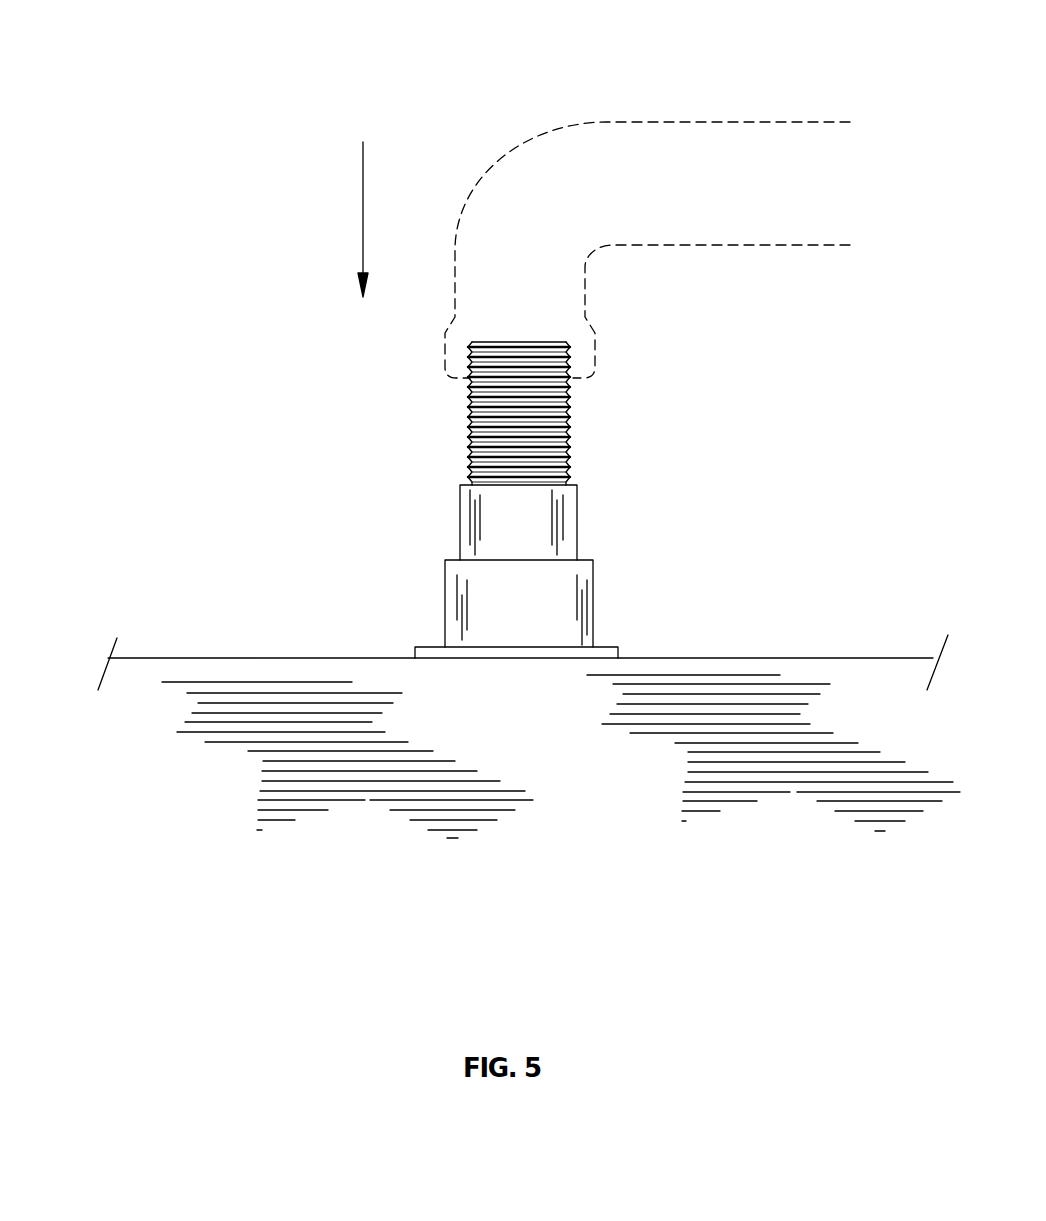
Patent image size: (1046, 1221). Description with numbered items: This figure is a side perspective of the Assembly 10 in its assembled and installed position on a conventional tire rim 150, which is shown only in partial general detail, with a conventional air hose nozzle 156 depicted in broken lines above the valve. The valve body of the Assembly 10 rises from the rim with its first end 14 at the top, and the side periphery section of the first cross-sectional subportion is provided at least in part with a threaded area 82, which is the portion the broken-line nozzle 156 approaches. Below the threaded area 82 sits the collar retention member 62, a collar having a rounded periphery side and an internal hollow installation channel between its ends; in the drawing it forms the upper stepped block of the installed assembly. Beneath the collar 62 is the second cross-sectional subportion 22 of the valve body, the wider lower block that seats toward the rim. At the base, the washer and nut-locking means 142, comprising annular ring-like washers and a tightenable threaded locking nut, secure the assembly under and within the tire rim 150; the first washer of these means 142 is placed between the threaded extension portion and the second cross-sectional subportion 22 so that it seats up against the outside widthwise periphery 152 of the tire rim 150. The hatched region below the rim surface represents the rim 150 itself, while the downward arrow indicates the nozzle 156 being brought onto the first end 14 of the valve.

The Assembly 10 is at (559, 437).
The first end 14 is at (518, 340).
The second cross-sectional subportion 22 is at (497, 625).
The collar retention member 62 is at (507, 530).
The threaded area 82 is at (568, 442).
The washer and nut-locking means 142 is at (557, 613).
The tire rim 150 is at (868, 710).
The outside widthwise periphery 152 is at (753, 657).
The coupling nut 156 is at (688, 177).